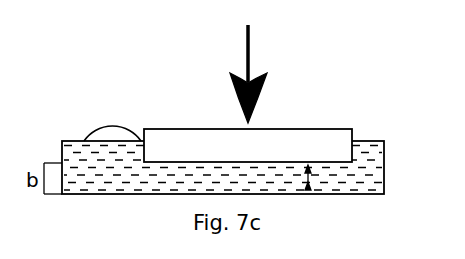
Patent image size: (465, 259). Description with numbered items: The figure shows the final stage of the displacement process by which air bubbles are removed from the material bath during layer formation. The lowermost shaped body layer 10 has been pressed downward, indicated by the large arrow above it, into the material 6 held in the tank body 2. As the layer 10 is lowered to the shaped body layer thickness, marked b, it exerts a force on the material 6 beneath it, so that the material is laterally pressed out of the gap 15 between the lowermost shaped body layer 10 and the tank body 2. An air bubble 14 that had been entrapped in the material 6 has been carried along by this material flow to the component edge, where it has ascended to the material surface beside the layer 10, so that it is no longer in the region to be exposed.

The tank body 2 is at (347, 194).
The material 6 is at (369, 173).
The lowermost shaped body layer 10 is at (330, 129).
The air bubble 14 is at (102, 128).
The gap 15 is at (309, 190).